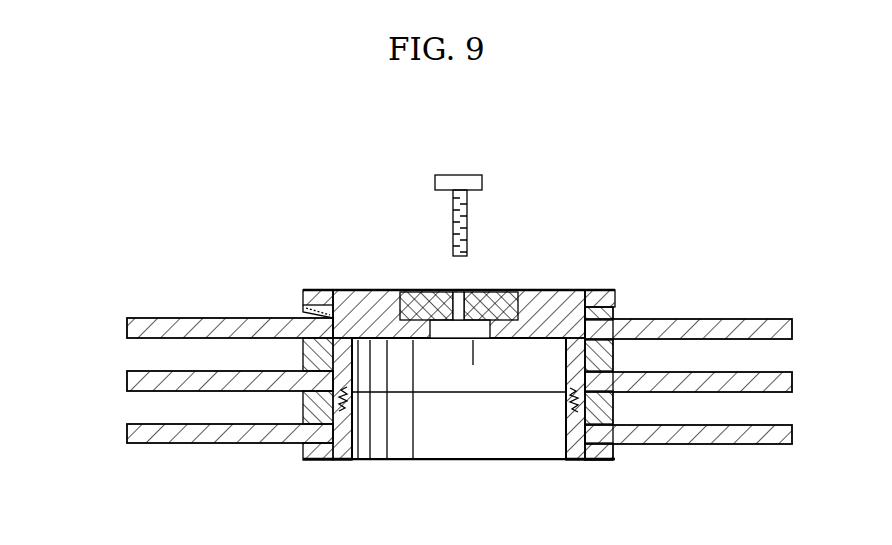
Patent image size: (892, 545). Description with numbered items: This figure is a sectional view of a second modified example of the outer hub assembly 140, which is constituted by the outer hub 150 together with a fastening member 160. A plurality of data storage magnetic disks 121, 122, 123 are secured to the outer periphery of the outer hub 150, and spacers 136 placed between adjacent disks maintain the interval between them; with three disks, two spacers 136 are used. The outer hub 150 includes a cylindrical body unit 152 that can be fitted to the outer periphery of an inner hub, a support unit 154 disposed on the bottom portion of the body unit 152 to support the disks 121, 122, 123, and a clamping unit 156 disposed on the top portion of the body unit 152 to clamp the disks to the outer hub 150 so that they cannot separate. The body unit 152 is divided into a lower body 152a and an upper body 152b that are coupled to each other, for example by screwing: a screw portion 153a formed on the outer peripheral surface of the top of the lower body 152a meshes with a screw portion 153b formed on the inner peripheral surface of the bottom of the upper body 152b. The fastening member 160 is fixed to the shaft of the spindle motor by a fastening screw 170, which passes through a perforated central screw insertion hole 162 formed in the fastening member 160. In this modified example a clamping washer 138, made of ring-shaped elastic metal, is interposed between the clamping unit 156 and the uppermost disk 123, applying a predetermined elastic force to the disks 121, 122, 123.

The data storage magnetic disk 121 is at (127, 433).
The data storage magnetic disk 122 is at (127, 381).
The data storage magnetic disk 123 is at (127, 328).
The spacer 136 is at (303, 355).
The clamping washer 138 is at (302, 307).
The outer hub assembly 140 is at (311, 233).
The outer hub 150 is at (554, 286).
The body unit 152 is at (767, 200).
The lower body 152a is at (630, 382).
The upper body 152b is at (615, 306).
The screw portion 153a is at (563, 408).
The screw portion 153b is at (343, 399).
The support unit 154 is at (605, 460).
The clamping unit 156 is at (607, 291).
The fastening member 160 is at (418, 291).
The screw insertion hole 162 is at (462, 291).
The fastening screw 170 is at (460, 175).